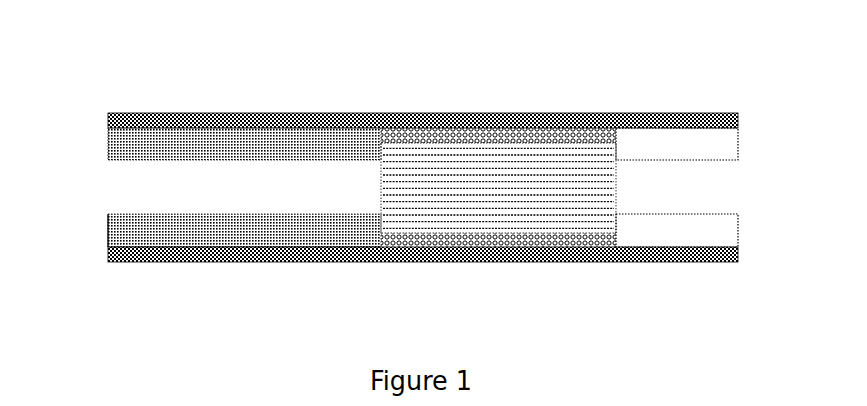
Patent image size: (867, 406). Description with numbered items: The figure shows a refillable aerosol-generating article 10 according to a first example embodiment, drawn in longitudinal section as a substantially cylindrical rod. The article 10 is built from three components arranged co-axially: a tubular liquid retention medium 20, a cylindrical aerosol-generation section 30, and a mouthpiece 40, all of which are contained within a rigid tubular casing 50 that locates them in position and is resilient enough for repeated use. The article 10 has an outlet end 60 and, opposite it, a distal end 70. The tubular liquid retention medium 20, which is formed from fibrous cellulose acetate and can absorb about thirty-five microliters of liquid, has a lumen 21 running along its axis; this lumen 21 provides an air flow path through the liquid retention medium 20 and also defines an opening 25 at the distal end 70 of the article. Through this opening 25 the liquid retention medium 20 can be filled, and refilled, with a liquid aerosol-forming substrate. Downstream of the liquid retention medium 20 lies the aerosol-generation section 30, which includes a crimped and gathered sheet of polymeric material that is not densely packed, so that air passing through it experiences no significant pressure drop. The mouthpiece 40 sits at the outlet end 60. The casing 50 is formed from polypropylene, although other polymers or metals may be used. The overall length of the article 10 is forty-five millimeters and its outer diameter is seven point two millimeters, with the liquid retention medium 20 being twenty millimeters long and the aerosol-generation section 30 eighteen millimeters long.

The refillable aerosol-generating article 10 is at (369, 88).
The tubular liquid retention medium 20 is at (243, 141).
The lumen 21 is at (170, 192).
The opening 25 is at (112, 186).
The aerosol-generation section 30 is at (531, 138).
The mouthpiece 40 is at (660, 147).
The rigid tubular casing 50 is at (492, 263).
The outlet end 60 is at (739, 229).
The distal end 70 is at (108, 232).